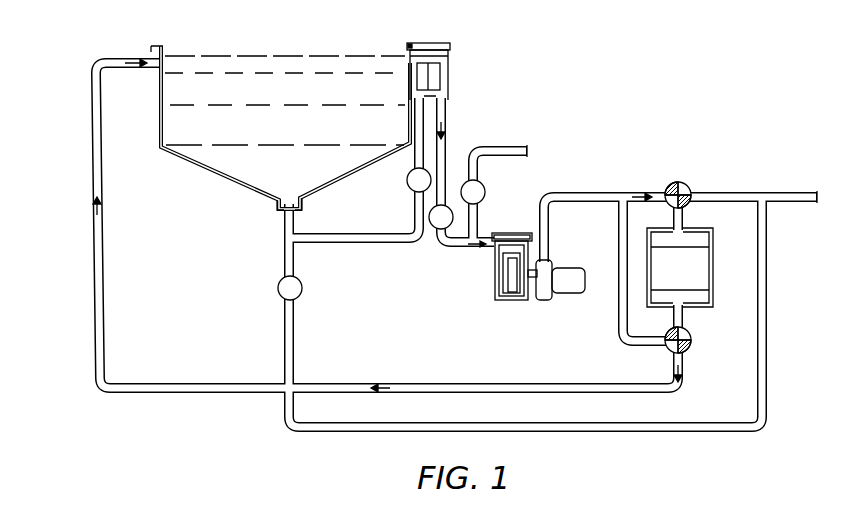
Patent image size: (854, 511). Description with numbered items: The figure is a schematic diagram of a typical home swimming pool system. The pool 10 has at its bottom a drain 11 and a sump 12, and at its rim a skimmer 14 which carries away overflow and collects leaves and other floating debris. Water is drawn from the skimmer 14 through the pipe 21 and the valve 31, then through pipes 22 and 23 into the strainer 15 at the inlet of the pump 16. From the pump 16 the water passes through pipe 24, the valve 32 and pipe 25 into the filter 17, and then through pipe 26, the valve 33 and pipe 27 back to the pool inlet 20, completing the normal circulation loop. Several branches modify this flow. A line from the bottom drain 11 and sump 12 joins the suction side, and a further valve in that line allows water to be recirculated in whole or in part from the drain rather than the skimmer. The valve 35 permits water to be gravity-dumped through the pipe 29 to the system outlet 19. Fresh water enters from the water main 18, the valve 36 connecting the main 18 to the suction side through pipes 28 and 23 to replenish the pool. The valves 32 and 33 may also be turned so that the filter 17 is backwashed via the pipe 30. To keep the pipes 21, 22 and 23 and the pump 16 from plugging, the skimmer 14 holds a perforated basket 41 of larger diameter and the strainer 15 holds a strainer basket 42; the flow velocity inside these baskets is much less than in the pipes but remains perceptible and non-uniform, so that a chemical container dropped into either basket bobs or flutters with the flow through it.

The pool 10 is at (245, 172).
The drain 11 is at (279, 208).
The sump 12 is at (301, 203).
The skimmer 14 is at (452, 47).
The strainer 15 is at (495, 285).
The pump 16 is at (549, 300).
The filter 17 is at (713, 270).
The water main 18 is at (530, 149).
The system outlet 19 is at (818, 192).
The pool inlet 20 is at (156, 69).
The pipe 21 is at (447, 130).
The pipe 22 is at (456, 247).
The pipe 23 is at (487, 232).
The pipe 24 is at (583, 192).
The pipe 25 is at (683, 212).
The pipe 26 is at (683, 315).
The pipe 27 is at (502, 383).
The pipe 28 is at (478, 226).
The pipe 29 is at (563, 422).
The pipe 30 is at (613, 236).
The valve 31 is at (432, 227).
The valve 32 is at (680, 182).
The valve 33 is at (666, 350).
The valve 35 is at (303, 288).
The valve 36 is at (484, 181).
The perforated basket 41 is at (441, 76).
The strainer basket 42 is at (508, 302).